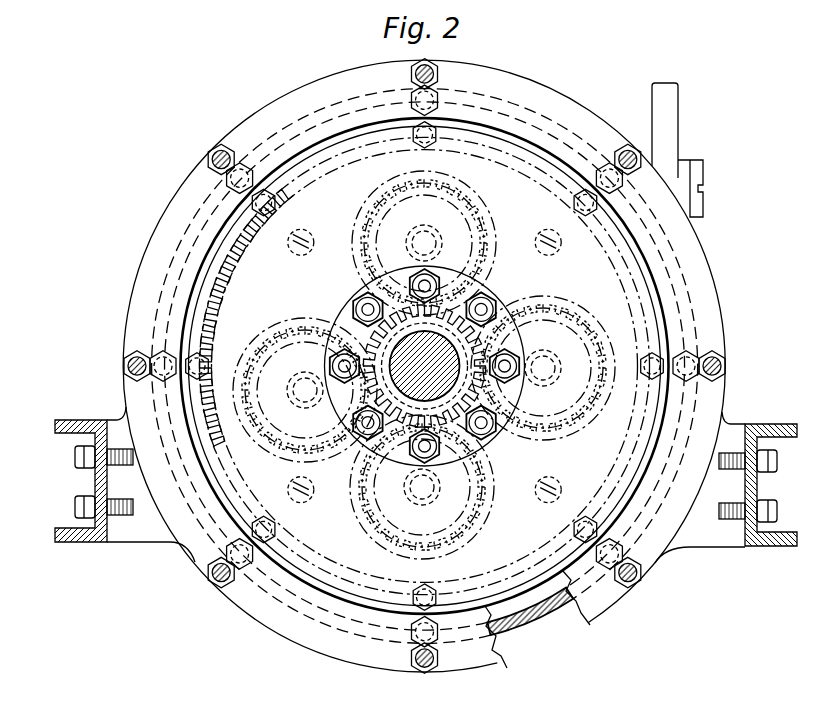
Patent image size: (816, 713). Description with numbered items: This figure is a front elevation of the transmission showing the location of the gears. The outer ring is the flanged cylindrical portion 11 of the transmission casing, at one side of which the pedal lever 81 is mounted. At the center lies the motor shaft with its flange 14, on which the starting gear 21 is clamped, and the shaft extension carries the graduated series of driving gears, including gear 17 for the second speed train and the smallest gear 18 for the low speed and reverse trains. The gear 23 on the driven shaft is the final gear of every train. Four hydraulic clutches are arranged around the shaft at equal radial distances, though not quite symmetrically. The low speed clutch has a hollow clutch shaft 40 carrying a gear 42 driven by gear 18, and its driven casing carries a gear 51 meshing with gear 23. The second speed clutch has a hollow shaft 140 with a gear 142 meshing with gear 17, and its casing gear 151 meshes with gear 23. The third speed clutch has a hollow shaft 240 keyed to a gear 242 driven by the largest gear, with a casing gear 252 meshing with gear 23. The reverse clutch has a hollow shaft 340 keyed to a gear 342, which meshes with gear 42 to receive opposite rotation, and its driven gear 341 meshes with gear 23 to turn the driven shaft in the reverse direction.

The flanged cylindrical portion 11 is at (608, 594).
The flange 14 is at (345, 404).
The gear 17 is at (350, 298).
The gear 18 is at (368, 450).
The starting gear 21 is at (218, 311).
The gear 23 is at (358, 505).
The hollow clutch shaft 40 is at (470, 525).
The gear 42 is at (368, 540).
The gear 51 is at (445, 540).
The pedal lever 81 is at (666, 117).
The hollow shaft 140 is at (548, 387).
The gear 142 is at (588, 320).
The gear 151 is at (570, 407).
The hollow shaft 240 is at (505, 200).
The gear 242 is at (430, 237).
The gear 252 is at (533, 175).
The hollow shaft 340 is at (298, 375).
The gear 341 is at (267, 433).
The gear 342 is at (301, 500).